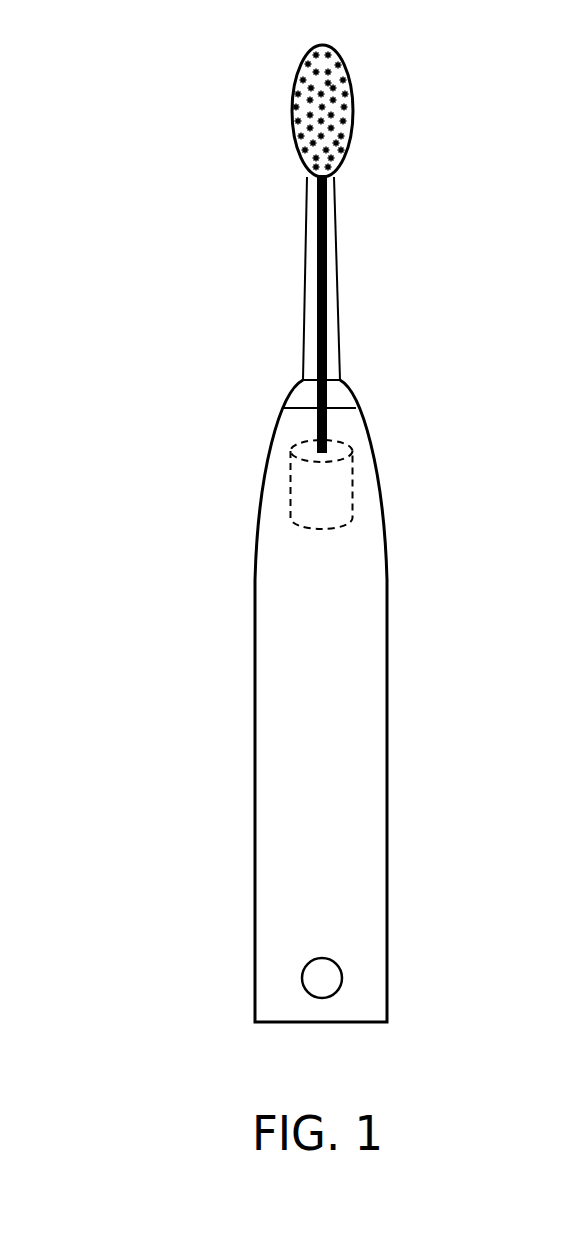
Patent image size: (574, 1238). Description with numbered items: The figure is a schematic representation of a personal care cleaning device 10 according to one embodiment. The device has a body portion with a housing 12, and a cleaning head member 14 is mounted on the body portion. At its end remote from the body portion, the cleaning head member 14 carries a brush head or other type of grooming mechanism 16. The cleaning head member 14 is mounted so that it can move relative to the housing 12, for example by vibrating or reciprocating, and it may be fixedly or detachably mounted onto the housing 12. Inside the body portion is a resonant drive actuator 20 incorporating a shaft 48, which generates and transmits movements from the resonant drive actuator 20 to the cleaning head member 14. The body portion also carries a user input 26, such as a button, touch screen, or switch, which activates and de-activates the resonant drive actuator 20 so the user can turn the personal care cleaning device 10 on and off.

The personal care cleaning device 10 is at (120, 91).
The housing 12 is at (237, 577).
The cleaning head member 14 is at (288, 262).
The grooming mechanism 16 is at (292, 110).
The resonant drive actuator 20 is at (262, 472).
The shaft 48 is at (322, 324).
The user input 26 is at (310, 978).